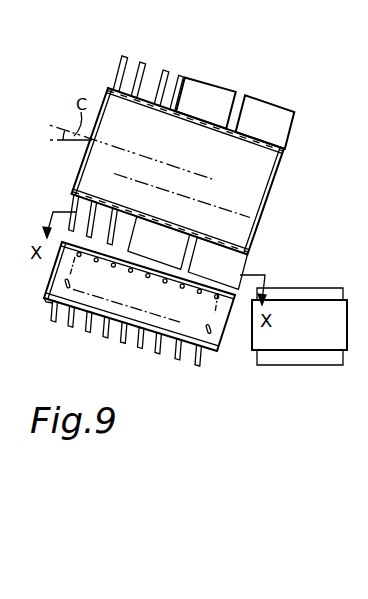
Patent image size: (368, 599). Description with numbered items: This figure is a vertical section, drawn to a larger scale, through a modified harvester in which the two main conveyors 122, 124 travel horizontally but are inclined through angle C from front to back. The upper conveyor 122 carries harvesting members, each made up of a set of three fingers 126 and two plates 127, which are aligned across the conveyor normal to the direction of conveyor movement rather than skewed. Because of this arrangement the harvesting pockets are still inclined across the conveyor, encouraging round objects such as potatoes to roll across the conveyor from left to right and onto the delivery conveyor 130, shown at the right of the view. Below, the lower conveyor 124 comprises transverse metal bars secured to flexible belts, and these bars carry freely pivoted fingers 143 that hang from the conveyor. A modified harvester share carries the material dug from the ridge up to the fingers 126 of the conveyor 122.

The main conveyor 122 is at (273, 187).
The lower conveyor 124 is at (50, 300).
The fingers 126 is at (165, 70).
The plates 127 is at (262, 106).
The delivery conveyor 130 is at (303, 309).
The freely pivoted fingers 143 is at (154, 350).